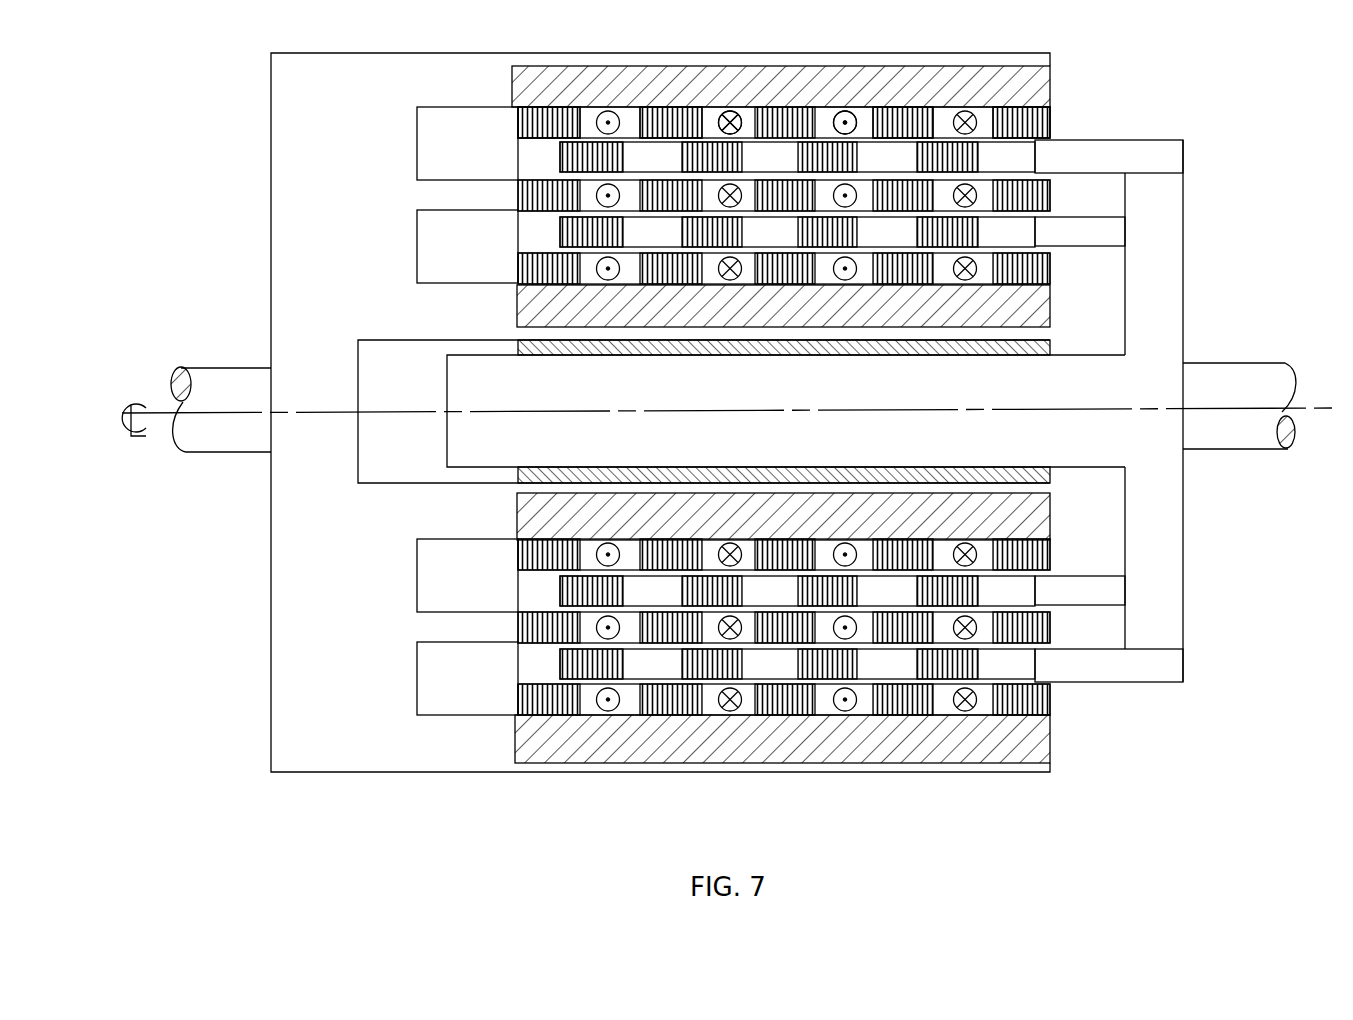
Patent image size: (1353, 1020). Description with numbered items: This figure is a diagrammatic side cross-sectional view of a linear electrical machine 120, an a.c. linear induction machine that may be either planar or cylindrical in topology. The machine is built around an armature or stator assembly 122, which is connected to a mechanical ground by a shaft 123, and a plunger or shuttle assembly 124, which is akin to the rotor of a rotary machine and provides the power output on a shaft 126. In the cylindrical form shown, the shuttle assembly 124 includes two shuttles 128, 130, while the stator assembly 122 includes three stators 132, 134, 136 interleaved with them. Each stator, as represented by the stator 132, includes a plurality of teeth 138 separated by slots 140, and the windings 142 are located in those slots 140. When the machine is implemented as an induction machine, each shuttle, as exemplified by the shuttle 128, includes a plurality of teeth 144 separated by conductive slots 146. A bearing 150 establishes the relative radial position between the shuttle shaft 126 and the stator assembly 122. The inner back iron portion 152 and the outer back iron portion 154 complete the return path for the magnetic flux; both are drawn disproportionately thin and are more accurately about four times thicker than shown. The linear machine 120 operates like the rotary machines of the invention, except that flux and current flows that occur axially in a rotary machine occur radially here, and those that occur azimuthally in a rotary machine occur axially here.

The linear electrical machine 120 is at (1312, 612).
The stator assembly 122 is at (296, 151).
The shaft 123 is at (222, 390).
The shuttle assembly 124 is at (1198, 323).
The shaft 126 is at (1232, 437).
The shuttle 128 is at (1092, 154).
The shuttle 130 is at (1120, 227).
The stator 132 is at (494, 121).
The stator 134 is at (494, 194).
The stator 136 is at (494, 266).
The teeth 138 is at (662, 107).
The slots 140 is at (943, 107).
The windings 142 is at (728, 107).
The teeth 144 is at (825, 160).
The conductive slots 146 is at (885, 229).
The bearing 150 is at (605, 350).
The inner back iron portion 152 is at (517, 298).
The outer back iron portion 154 is at (512, 80).